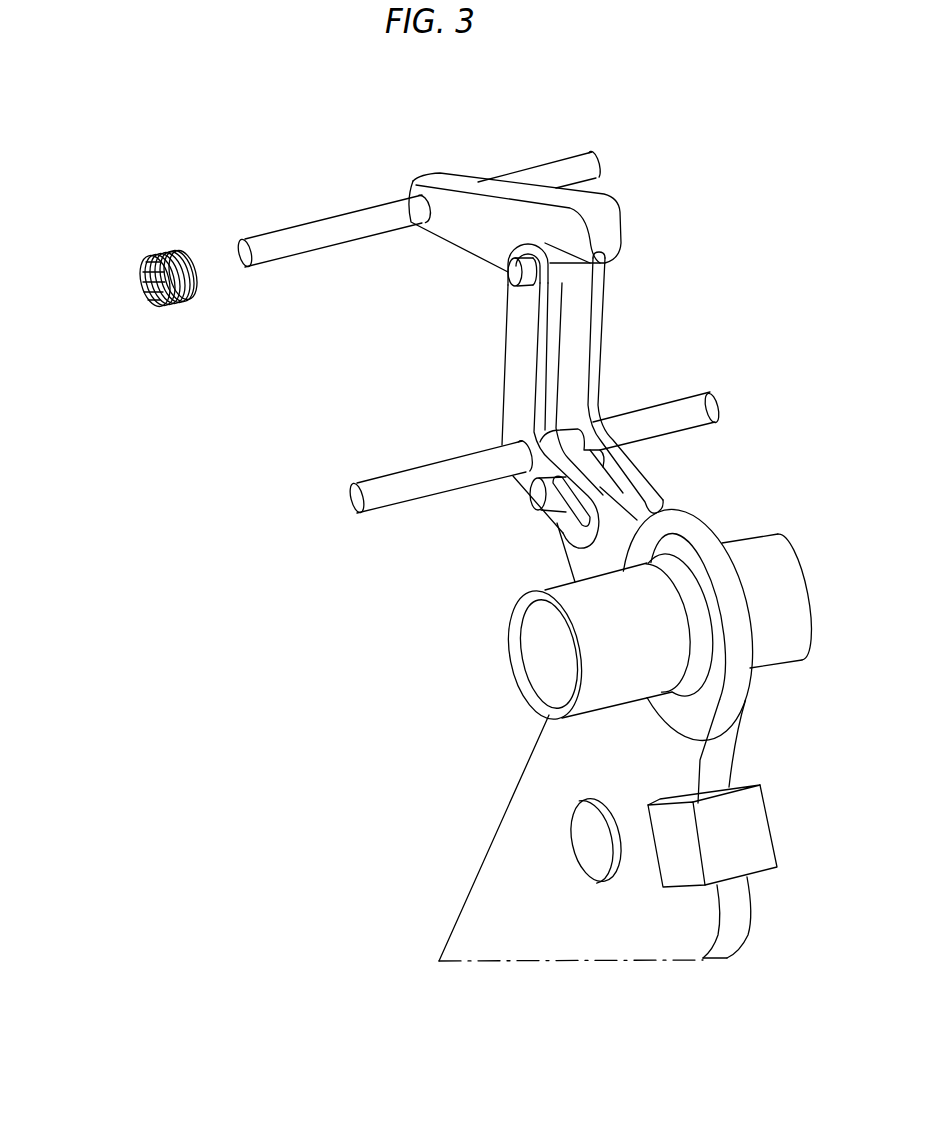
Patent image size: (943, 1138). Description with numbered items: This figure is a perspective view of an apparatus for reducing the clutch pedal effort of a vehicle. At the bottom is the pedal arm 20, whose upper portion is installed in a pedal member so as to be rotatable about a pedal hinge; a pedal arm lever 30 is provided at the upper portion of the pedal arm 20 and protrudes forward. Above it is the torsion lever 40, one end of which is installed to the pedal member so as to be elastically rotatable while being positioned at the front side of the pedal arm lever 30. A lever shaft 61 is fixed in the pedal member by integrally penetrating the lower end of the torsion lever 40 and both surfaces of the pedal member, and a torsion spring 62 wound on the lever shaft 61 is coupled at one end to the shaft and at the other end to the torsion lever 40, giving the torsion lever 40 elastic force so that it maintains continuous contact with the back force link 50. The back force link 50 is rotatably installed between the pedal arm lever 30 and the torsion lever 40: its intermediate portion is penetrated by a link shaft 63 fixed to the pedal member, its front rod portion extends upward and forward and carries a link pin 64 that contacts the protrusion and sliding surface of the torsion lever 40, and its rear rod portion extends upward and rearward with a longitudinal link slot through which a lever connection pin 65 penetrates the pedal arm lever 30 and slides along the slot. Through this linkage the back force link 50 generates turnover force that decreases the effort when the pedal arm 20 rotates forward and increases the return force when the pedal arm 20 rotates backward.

The pedal arm 20 is at (500, 892).
The pedal arm lever 30 is at (603, 490).
The torsion lever 40 is at (487, 180).
The back force link 50 is at (523, 318).
The lever shaft 61 is at (300, 237).
The torsion spring 62 is at (143, 250).
The link shaft 63 is at (356, 497).
The link pin 64 is at (510, 273).
The lever connection pin 65 is at (537, 497).